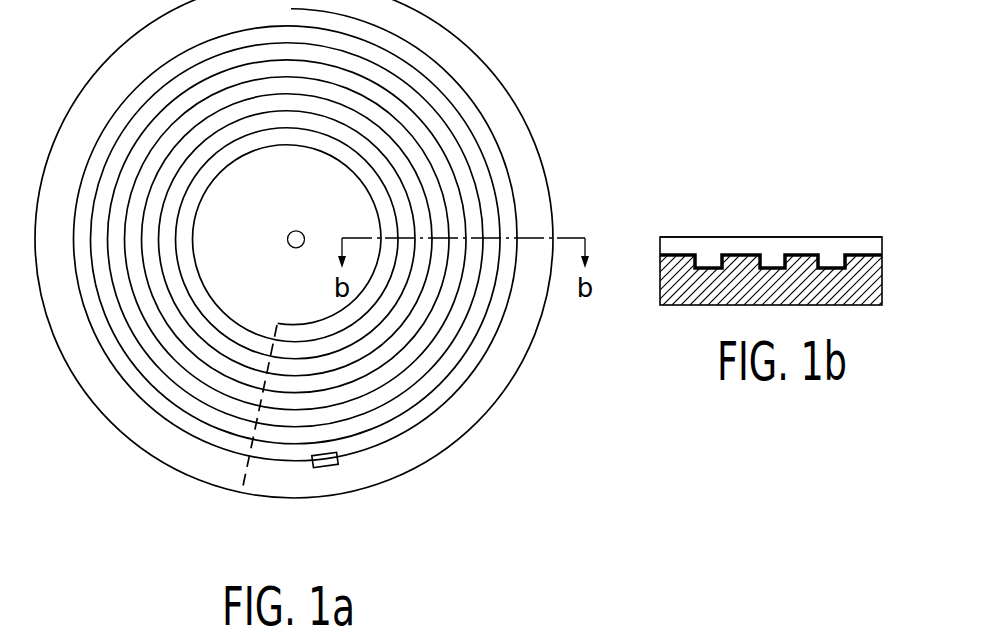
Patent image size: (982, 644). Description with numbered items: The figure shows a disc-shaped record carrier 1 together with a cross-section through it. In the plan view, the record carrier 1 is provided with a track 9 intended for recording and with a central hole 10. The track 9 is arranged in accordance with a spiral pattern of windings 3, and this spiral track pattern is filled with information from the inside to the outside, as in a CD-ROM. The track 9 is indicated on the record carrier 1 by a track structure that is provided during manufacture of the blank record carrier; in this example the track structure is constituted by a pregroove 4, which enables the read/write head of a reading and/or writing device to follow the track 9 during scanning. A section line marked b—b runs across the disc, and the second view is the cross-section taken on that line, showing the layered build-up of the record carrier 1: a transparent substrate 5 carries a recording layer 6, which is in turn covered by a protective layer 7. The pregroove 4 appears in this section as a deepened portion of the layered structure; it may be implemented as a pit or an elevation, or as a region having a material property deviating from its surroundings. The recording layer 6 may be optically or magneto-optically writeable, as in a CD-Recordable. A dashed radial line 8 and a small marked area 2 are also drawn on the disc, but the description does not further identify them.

In FIG. 1a, the record carrier 1 is at (521, 48).
In FIG. 1b, the record carrier 1 is at (653, 197).
In FIG. 1a, the identification mark / pit area 2 is at (323, 468).
In FIG. 1a, the windings 3 is at (200, 332).
In FIG. 1b, the pregroove 4 is at (773, 271).
In FIG. 1b, the transparent substrate 5 is at (683, 297).
In FIG. 1b, the recording layer 6 is at (853, 253).
In FIG. 1b, the protective layer 7 is at (766, 243).
In FIG. 1a, the radial reference line 8 is at (250, 461).
In FIG. 1a, the track 9 is at (150, 413).
In FIG. 1a, the central hole 10 is at (296, 231).